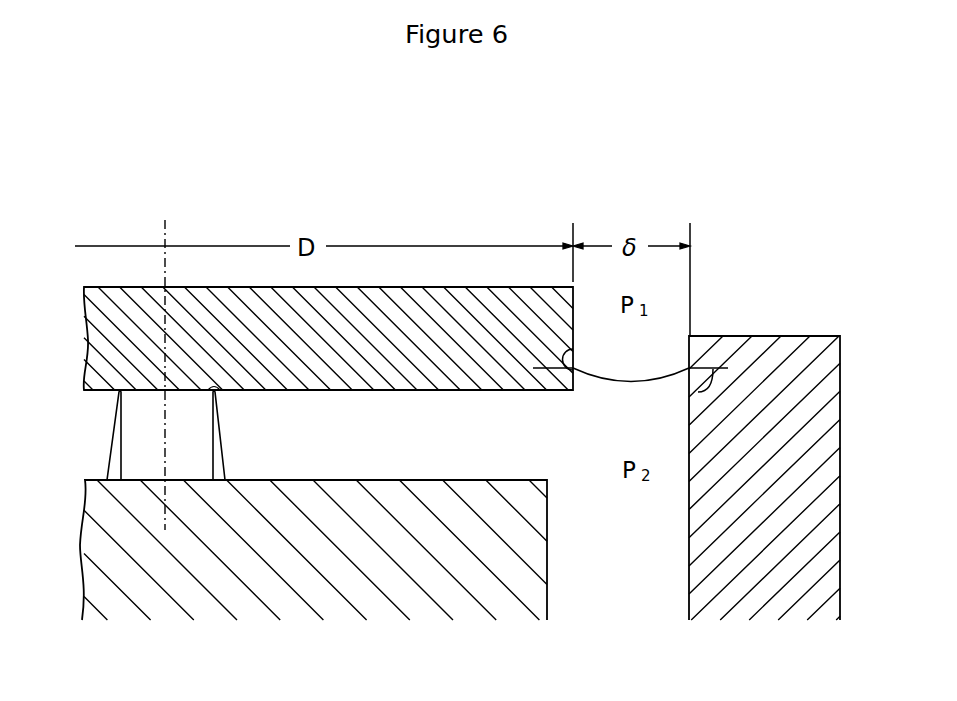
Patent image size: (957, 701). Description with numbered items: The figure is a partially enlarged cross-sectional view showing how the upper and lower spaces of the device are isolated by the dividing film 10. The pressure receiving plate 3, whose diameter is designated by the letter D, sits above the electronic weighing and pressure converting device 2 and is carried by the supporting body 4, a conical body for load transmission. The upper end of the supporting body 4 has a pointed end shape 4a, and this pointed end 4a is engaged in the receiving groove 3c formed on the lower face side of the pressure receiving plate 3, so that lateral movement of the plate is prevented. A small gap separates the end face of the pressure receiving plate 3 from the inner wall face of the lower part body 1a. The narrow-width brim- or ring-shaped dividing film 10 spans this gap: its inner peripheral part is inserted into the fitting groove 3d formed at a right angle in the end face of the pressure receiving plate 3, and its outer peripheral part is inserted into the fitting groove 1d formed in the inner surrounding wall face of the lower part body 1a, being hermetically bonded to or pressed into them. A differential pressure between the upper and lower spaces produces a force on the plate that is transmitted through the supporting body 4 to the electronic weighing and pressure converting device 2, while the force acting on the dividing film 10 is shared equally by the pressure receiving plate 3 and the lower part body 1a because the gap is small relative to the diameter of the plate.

The lower part body 1a is at (807, 493).
The fitting groove 1d is at (698, 392).
The electronic weighing and pressure converting device 2 is at (100, 545).
The pressure receiving plate 3 is at (442, 367).
The receiving groove 3c is at (215, 390).
The fitting groove 3d is at (573, 349).
The supporting body 4 is at (113, 460).
The pointed end 4a is at (211, 392).
The dividing film 10 is at (603, 381).